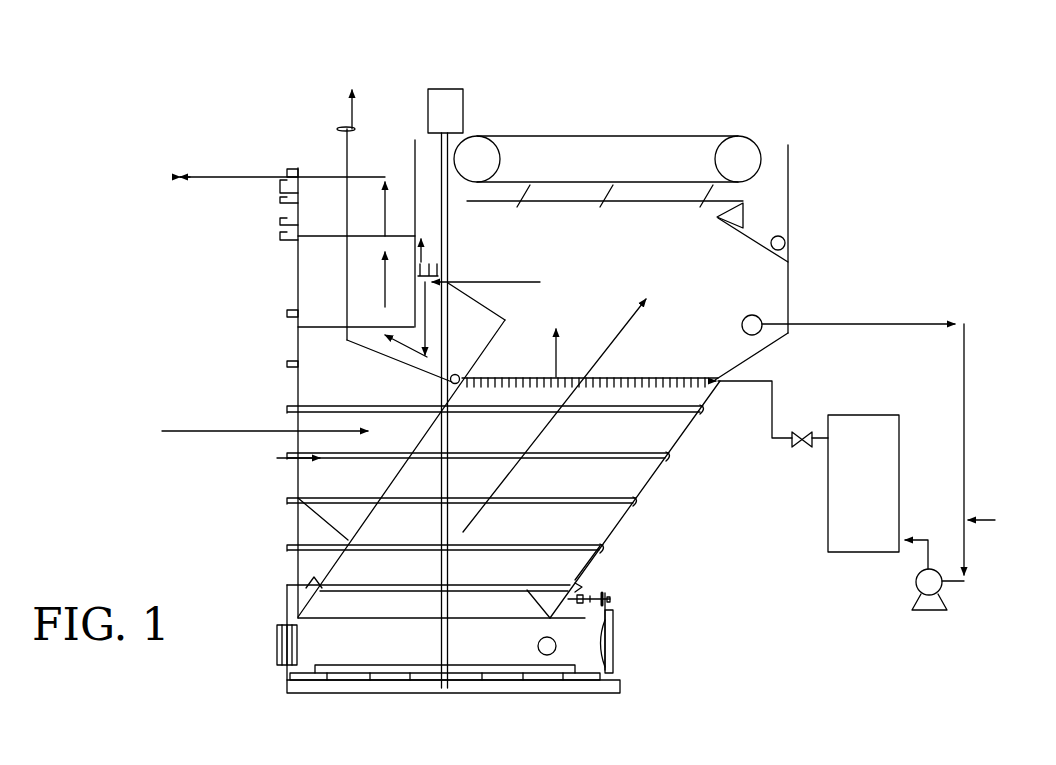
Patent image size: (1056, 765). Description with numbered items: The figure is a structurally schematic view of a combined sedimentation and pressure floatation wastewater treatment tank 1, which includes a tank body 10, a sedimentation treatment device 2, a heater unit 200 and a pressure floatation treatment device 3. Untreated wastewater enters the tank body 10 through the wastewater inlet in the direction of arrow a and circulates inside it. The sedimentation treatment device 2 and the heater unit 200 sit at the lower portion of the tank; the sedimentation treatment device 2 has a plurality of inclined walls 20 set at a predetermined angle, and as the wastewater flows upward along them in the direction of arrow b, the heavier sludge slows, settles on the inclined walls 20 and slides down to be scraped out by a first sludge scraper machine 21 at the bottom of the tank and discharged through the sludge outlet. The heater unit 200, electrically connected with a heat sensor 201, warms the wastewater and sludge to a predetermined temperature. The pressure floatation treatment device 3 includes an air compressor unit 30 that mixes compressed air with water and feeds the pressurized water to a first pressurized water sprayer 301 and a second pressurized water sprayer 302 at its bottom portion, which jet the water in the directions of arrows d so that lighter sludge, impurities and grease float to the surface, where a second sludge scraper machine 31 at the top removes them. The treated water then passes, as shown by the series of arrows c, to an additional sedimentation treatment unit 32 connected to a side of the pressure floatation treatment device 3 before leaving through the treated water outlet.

The combined sedimentation and pressure floatation wastewater treatment tank 1 is at (760, 575).
The sedimentation treatment device 2 is at (582, 465).
The pressure floatation treatment device 3 is at (725, 277).
The tank body 10 is at (622, 520).
The inclined walls 20 is at (430, 423).
The first sludge scraper machine 21 is at (450, 112).
The air compressor unit 30 is at (938, 481).
The second sludge scraper machine 31 is at (632, 147).
The additional sedimentation treatment unit 32 is at (337, 263).
The heater unit 200 is at (278, 655).
The heat sensor 201 is at (556, 646).
The first pressurized water sprayer 301 is at (492, 377).
The second pressurized water sprayer 302 is at (437, 268).
The wastewater inflow direction arrow a is at (202, 430).
The upward flow direction arrow b is at (600, 335).
The treated water flow direction arrows c is at (515, 282).
The pressurized water spraying direction arrows d is at (440, 268).